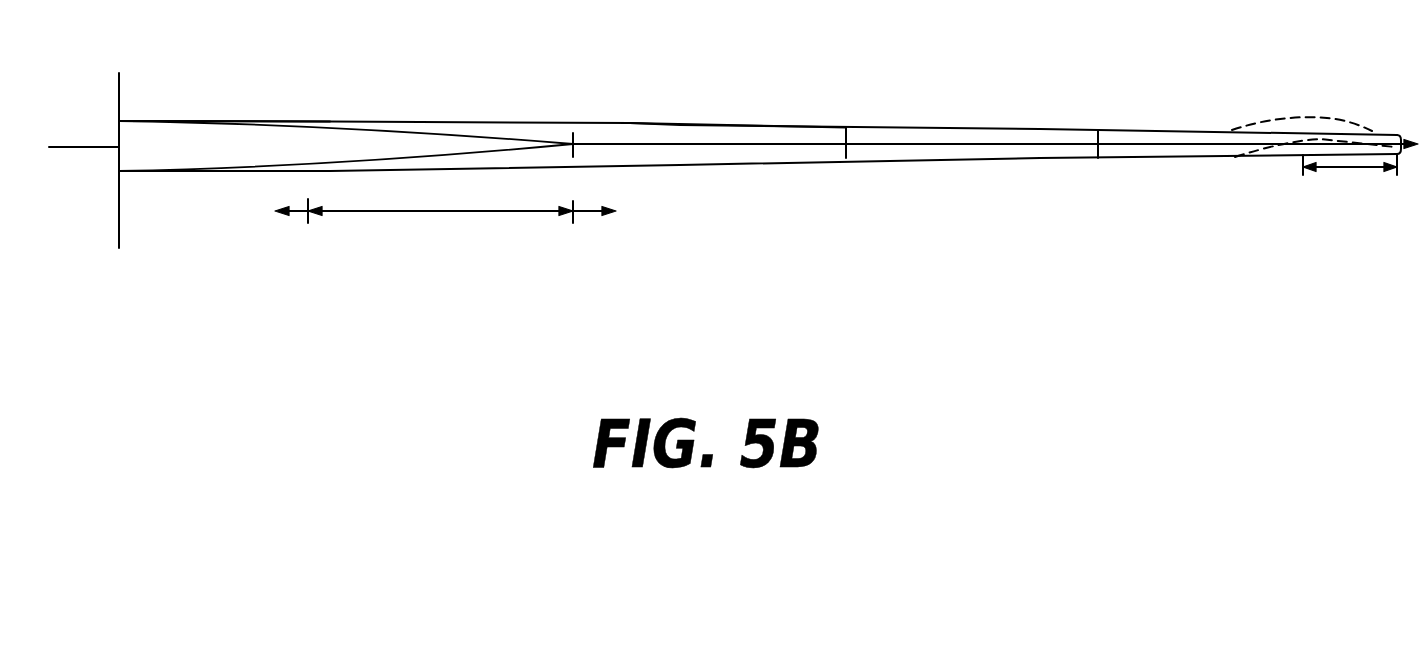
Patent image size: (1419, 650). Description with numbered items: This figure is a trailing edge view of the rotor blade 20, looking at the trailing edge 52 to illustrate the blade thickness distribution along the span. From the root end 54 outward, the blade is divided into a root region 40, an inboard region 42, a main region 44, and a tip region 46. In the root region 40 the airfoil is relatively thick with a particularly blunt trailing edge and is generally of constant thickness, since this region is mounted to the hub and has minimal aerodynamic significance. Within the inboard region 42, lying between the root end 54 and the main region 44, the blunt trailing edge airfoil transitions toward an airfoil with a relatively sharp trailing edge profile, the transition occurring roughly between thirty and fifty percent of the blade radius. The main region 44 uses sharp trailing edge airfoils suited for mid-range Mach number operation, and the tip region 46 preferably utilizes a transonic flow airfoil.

The rotor blade 20 is at (930, 90).
The trailing edge 52 is at (703, 138).
The root end 54 is at (312, 122).
The root region 40 is at (248, 259).
The inboard region 42 is at (451, 287).
The main region 44 is at (675, 263).
The tip region 46 is at (1321, 198).